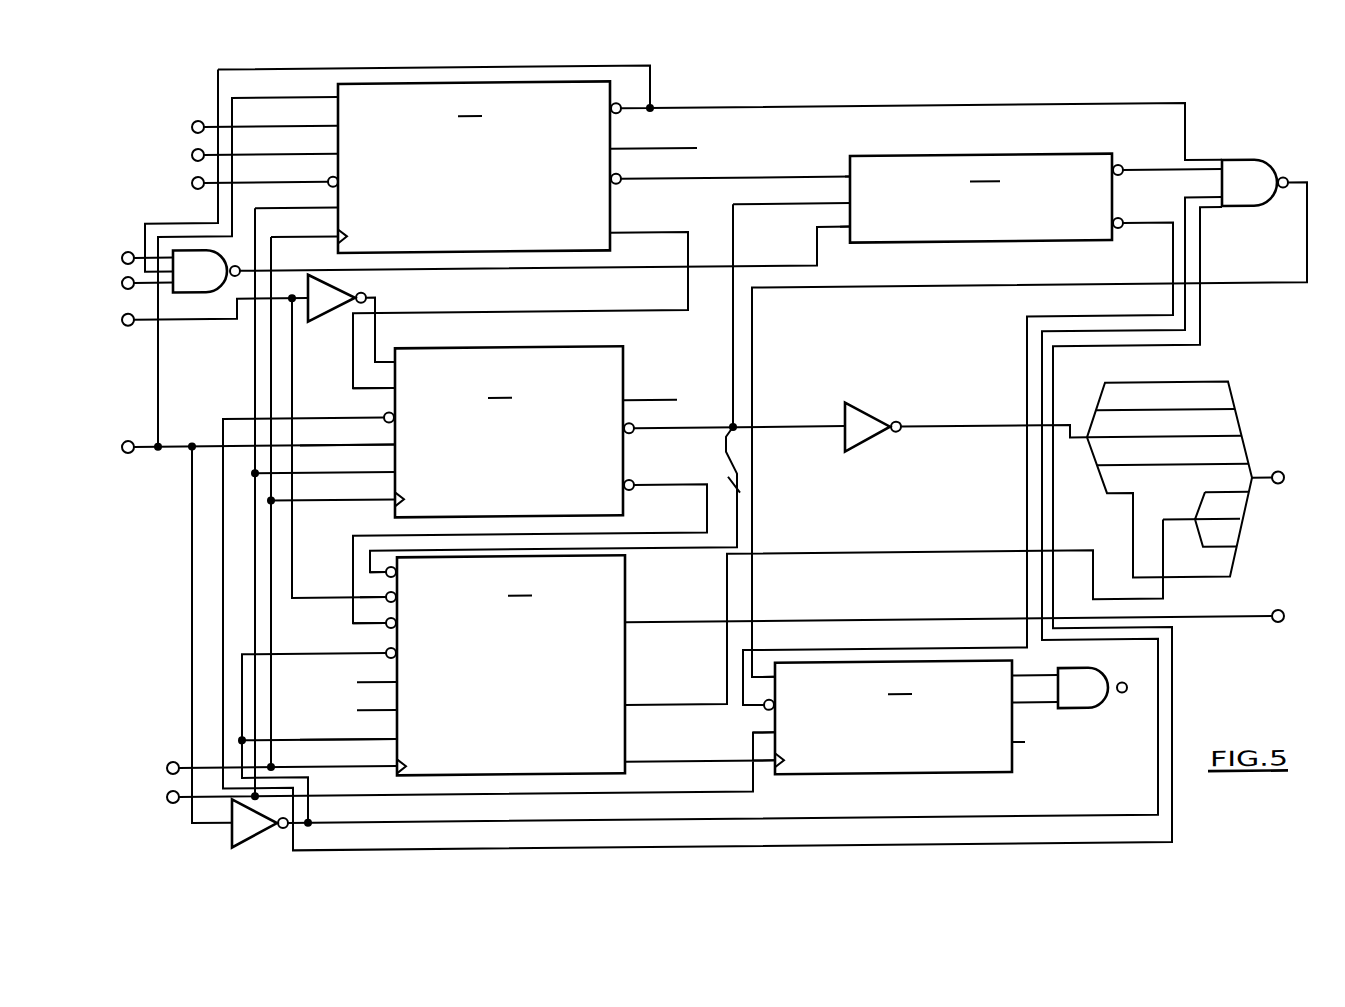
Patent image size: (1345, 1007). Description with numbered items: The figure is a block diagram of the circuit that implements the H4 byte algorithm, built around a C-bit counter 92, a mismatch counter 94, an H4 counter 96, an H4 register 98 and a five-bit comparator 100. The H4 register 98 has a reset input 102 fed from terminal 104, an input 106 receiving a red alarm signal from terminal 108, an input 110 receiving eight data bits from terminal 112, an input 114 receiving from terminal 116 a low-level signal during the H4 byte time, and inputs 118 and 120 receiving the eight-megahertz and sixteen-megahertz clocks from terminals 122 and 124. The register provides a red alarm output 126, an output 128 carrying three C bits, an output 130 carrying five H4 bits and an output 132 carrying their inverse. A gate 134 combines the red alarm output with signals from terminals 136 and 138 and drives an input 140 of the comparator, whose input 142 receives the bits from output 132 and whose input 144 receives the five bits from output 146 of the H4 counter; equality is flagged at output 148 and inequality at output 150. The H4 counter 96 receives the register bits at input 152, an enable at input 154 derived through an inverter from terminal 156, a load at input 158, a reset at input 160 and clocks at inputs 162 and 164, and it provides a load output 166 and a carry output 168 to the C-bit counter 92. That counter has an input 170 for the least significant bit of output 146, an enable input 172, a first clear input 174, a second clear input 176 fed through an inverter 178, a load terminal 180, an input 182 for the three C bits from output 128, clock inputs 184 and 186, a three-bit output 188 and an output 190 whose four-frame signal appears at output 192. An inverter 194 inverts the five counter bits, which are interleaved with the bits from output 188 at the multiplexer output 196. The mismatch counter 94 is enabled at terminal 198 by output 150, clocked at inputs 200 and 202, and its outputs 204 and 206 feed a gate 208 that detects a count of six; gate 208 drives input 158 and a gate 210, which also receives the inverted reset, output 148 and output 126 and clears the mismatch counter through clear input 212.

The C-bit counter 92 is at (511, 665).
The mismatch counter 94 is at (893, 718).
The H4 counter 96 is at (509, 431).
The H4 register 98 is at (474, 167).
The five-bit comparator 100 is at (981, 198).
The reset input 102 is at (338, 90).
The terminal 104 is at (128, 436).
The input 106 is at (338, 120).
The terminal 108 is at (198, 116).
The input 110 is at (338, 148).
The terminal 112 is at (207, 150).
The input 114 is at (328, 176).
The terminal 116 is at (198, 184).
The input 118 is at (338, 203).
The input 120 is at (338, 232).
The terminal 122 is at (173, 798).
The terminal 124 is at (173, 757).
The red alarm output 126 is at (621, 104).
The output 128 is at (612, 146).
The output 130 is at (612, 234).
The output 132 is at (620, 182).
The gate 134 is at (222, 246).
The terminal 136 is at (128, 246).
The terminal 138 is at (134, 279).
The input 140 is at (850, 244).
The input 142 is at (850, 158).
The input 144 is at (850, 206).
The output 146 is at (632, 433).
The output 148 is at (1118, 169).
The output 150 is at (1118, 232).
The input 152 is at (395, 385).
The input 154 is at (395, 346).
The terminal 156 is at (134, 316).
The input 158 is at (384, 414).
The input 160 is at (395, 442).
The input 162 is at (395, 469).
The input 164 is at (395, 496).
The output 166 is at (626, 399).
The carry output 168 is at (632, 490).
The input 170 is at (386, 569).
The input 172 is at (386, 594).
The first clear input 174 is at (386, 620).
The second clear input 176 is at (386, 650).
The inverter 178 is at (232, 838).
The terminal 180 is at (397, 679).
The input 182 is at (397, 707).
The input 184 is at (397, 736).
The input 186 is at (397, 764).
The output 188 is at (625, 704).
The output 190 is at (625, 622).
The output 192 is at (1278, 616).
The inverter 194 is at (860, 404).
The multiplexer output 196 is at (1278, 477).
The terminal 198 is at (762, 708).
The input 200 is at (775, 737).
The input 202 is at (775, 765).
The first output 204 is at (1030, 678).
The second output 206 is at (1030, 706).
The gate 208 is at (1095, 712).
The gate 210 is at (1240, 166).
The clear input 212 is at (766, 677).